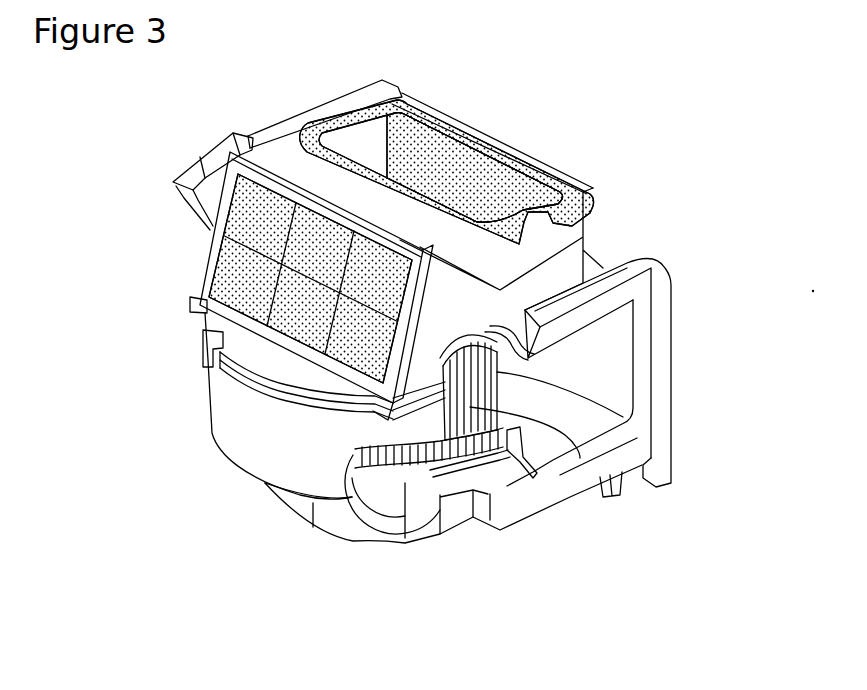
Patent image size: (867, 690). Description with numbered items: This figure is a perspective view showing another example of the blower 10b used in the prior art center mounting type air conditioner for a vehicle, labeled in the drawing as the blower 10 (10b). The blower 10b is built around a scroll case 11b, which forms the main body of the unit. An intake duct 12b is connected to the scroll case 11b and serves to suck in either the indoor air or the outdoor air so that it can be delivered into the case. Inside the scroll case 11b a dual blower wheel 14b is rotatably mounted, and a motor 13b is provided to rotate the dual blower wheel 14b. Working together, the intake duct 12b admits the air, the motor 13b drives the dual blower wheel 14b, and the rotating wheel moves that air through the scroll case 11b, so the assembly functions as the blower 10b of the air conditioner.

The filter assembly 10 is at (234, 276).
The blower 10b is at (303, 276).
The scroll case 11b is at (237, 443).
The intake duct 12b is at (583, 253).
The motor 13b is at (405, 538).
The dual blower wheel 14b is at (580, 455).